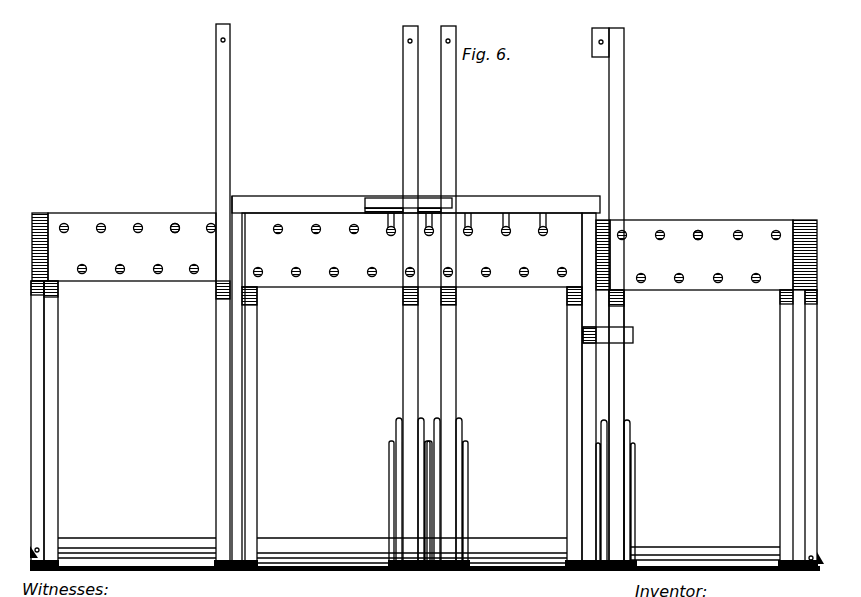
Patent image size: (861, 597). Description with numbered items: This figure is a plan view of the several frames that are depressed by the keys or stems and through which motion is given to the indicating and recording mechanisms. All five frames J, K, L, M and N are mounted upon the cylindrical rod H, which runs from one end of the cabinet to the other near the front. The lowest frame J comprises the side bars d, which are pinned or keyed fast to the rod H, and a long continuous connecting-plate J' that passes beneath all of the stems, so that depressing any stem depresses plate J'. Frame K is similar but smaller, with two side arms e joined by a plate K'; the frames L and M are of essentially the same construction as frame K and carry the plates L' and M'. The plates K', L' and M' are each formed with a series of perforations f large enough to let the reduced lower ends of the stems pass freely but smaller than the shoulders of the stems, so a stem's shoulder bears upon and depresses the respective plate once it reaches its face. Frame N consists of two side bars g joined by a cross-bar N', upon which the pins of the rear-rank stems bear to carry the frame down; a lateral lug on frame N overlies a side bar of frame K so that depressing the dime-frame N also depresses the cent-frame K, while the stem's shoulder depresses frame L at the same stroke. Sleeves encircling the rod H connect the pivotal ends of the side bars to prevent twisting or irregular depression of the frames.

The frame N is at (256, 370).
The connecting cross-bar N' is at (416, 204).
The plate M' is at (132, 247).
The plate L' is at (412, 250).
The plate K' is at (701, 255).
The continuous connecting-plate J' is at (321, 232).
The frame J is at (418, 262).
The frame M is at (64, 423).
The frame L is at (264, 426).
The frame K is at (627, 427).
The perforations f is at (206, 228).
The side bars g is at (236, 395).
The side arms or bars e is at (624, 376).
The side bars or arms d is at (421, 423).
The cylindrical rod or stem H is at (32, 543).